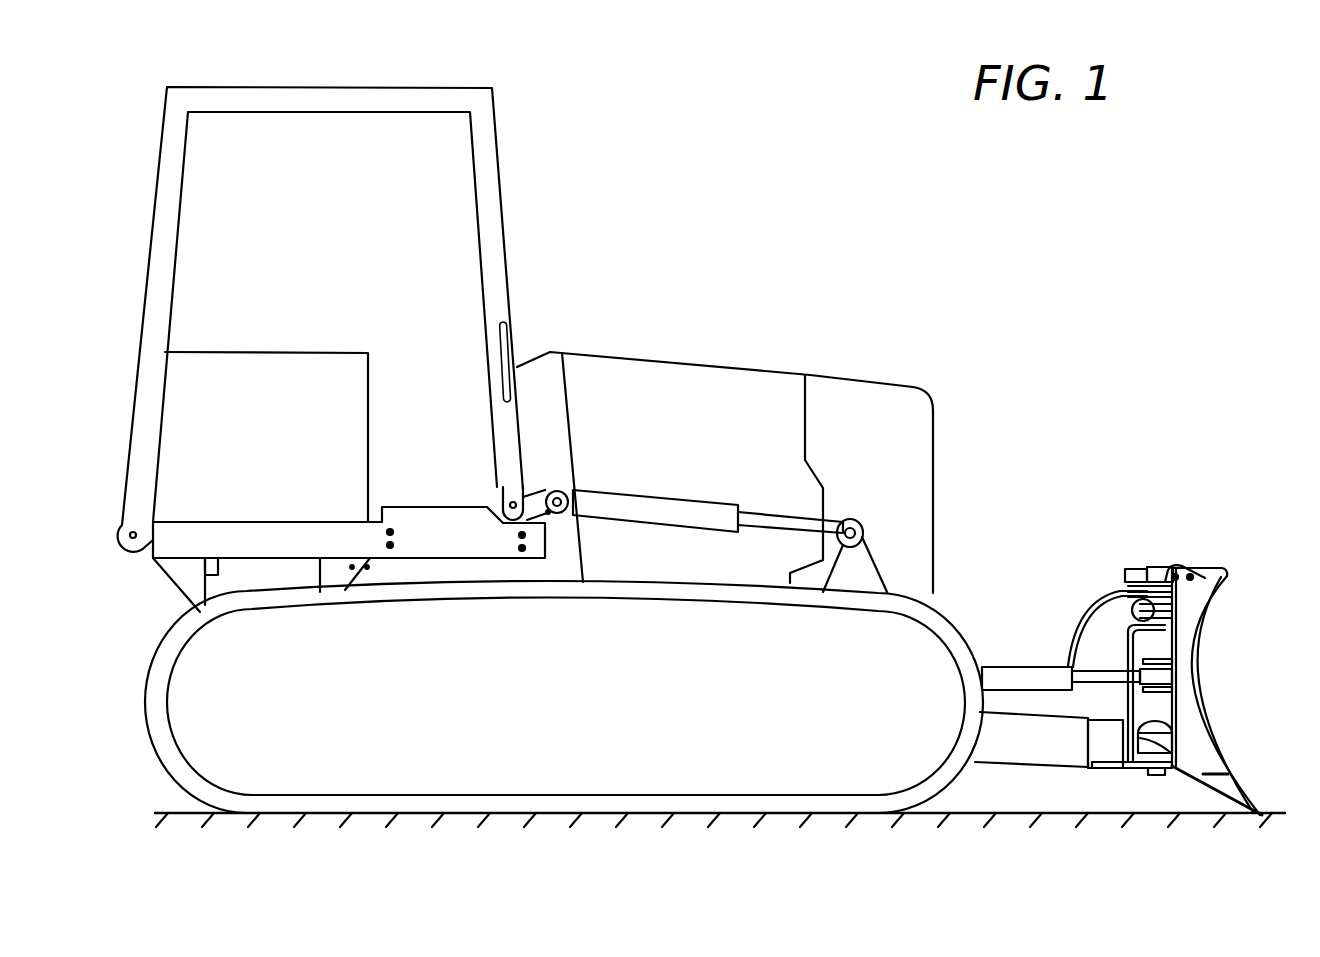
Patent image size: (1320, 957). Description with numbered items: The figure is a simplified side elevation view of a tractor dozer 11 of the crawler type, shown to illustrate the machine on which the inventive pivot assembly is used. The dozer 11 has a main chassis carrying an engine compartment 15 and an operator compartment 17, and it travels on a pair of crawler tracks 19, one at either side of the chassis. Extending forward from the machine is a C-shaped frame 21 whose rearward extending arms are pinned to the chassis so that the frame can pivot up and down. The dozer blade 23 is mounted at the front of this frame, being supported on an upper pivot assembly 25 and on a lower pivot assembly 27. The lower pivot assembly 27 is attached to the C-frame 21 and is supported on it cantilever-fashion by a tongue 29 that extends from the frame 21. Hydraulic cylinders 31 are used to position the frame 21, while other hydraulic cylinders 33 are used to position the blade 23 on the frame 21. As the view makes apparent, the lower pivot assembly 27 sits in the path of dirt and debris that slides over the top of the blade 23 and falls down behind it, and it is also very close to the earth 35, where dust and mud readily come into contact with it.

The tractor dozer 11 is at (628, 305).
The engine compartment 15 is at (760, 375).
The operator compartment 17 is at (318, 254).
The crawler tracks 19 is at (170, 643).
The C-shaped frame 21 is at (1033, 750).
The dozer blade 23 is at (1215, 572).
The upper pivot assembly 25 is at (1120, 594).
The lower pivot assembly 27 is at (1172, 738).
The tongue 29 is at (1110, 772).
The hydraulic cylinders 31 is at (632, 498).
The hydraulic cylinders 33 is at (1028, 668).
The earth 35 is at (1097, 818).